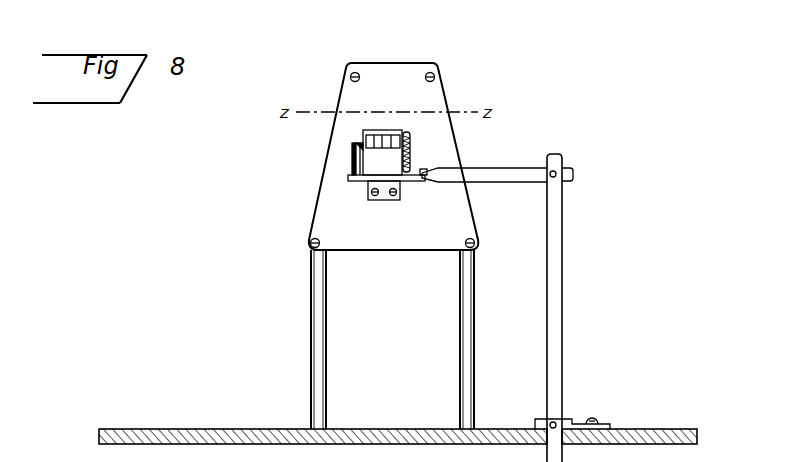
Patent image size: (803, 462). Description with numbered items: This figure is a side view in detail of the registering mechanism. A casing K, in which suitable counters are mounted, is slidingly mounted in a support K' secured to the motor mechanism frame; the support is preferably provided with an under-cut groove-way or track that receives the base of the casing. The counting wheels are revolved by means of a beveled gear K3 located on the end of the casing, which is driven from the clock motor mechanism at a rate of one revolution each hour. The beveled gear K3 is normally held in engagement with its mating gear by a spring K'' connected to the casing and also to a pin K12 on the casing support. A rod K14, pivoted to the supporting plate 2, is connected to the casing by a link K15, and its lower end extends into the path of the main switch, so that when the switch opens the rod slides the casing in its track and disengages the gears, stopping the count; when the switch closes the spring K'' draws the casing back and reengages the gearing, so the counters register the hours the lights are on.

The casing K is at (355, 148).
The support K' is at (356, 187).
The spring K'' is at (313, 150).
The pin K12 is at (352, 158).
The beveled gear K3 is at (410, 141).
The rod K15 is at (515, 174).
The rod K14 is at (560, 250).
The supporting plate 2 is at (647, 429).